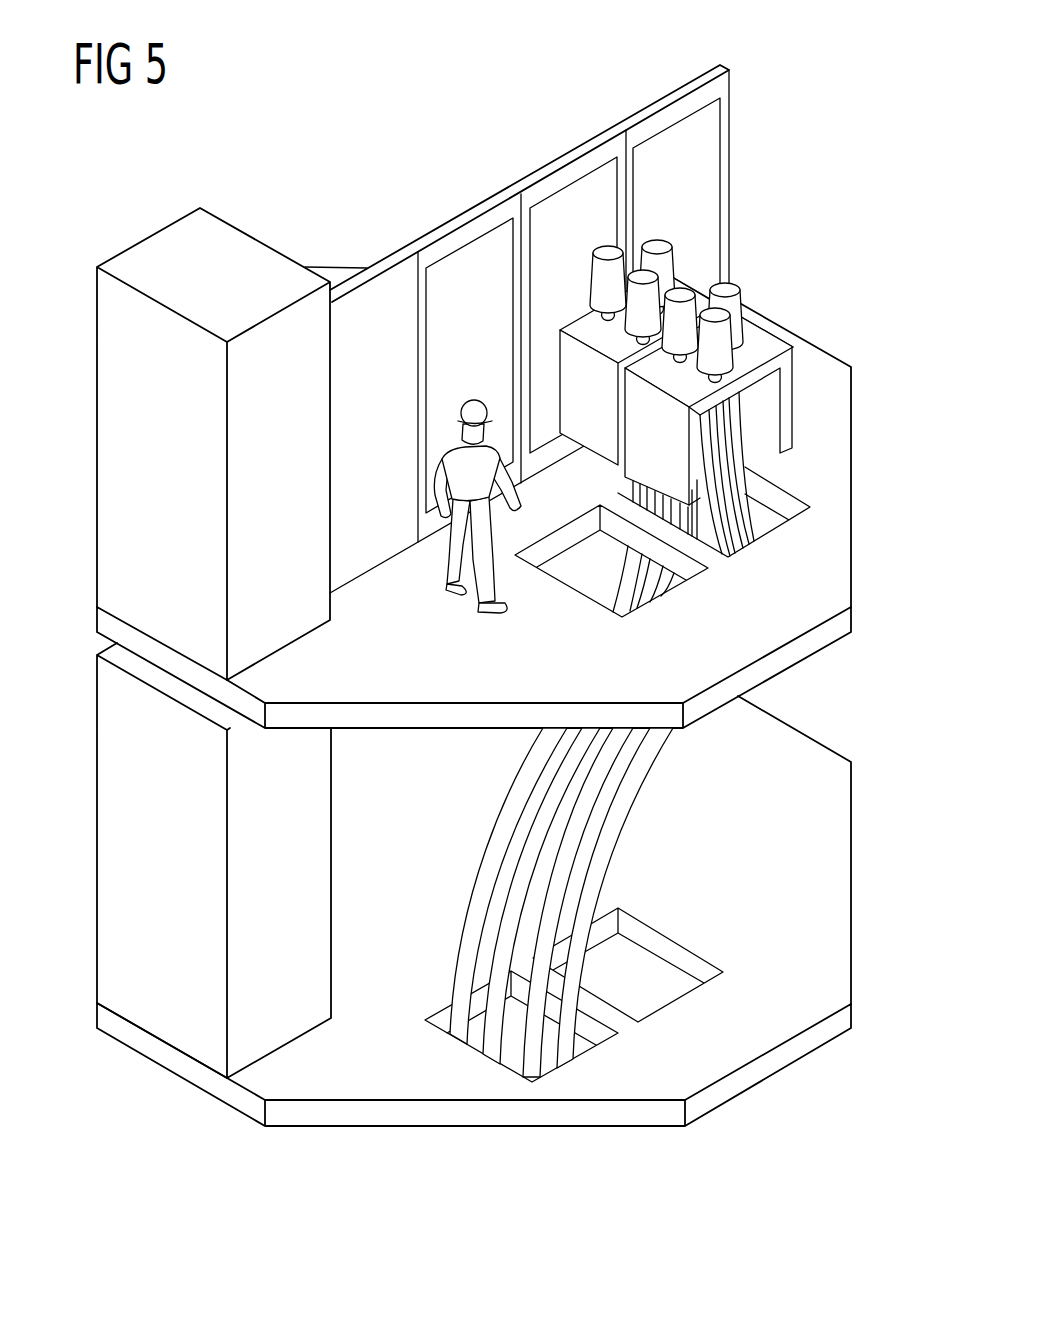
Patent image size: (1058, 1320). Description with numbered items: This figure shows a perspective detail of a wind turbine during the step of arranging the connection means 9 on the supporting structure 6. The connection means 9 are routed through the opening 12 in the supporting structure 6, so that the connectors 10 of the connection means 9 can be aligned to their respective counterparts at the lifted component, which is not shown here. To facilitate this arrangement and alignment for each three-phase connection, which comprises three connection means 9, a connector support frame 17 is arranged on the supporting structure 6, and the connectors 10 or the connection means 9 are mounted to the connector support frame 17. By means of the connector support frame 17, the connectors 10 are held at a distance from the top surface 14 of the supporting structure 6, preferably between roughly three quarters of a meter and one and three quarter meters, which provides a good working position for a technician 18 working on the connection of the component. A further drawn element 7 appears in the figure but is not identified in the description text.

The upper floor slab 6 is at (840, 624).
The lower floor slab 7 is at (843, 1016).
The cables 9 is at (483, 1054).
The cable termination boxes 10 is at (740, 352).
The cable bundle 12 is at (765, 515).
The wall 14 is at (838, 556).
The insulators 17 is at (693, 280).
The person 18 is at (448, 577).